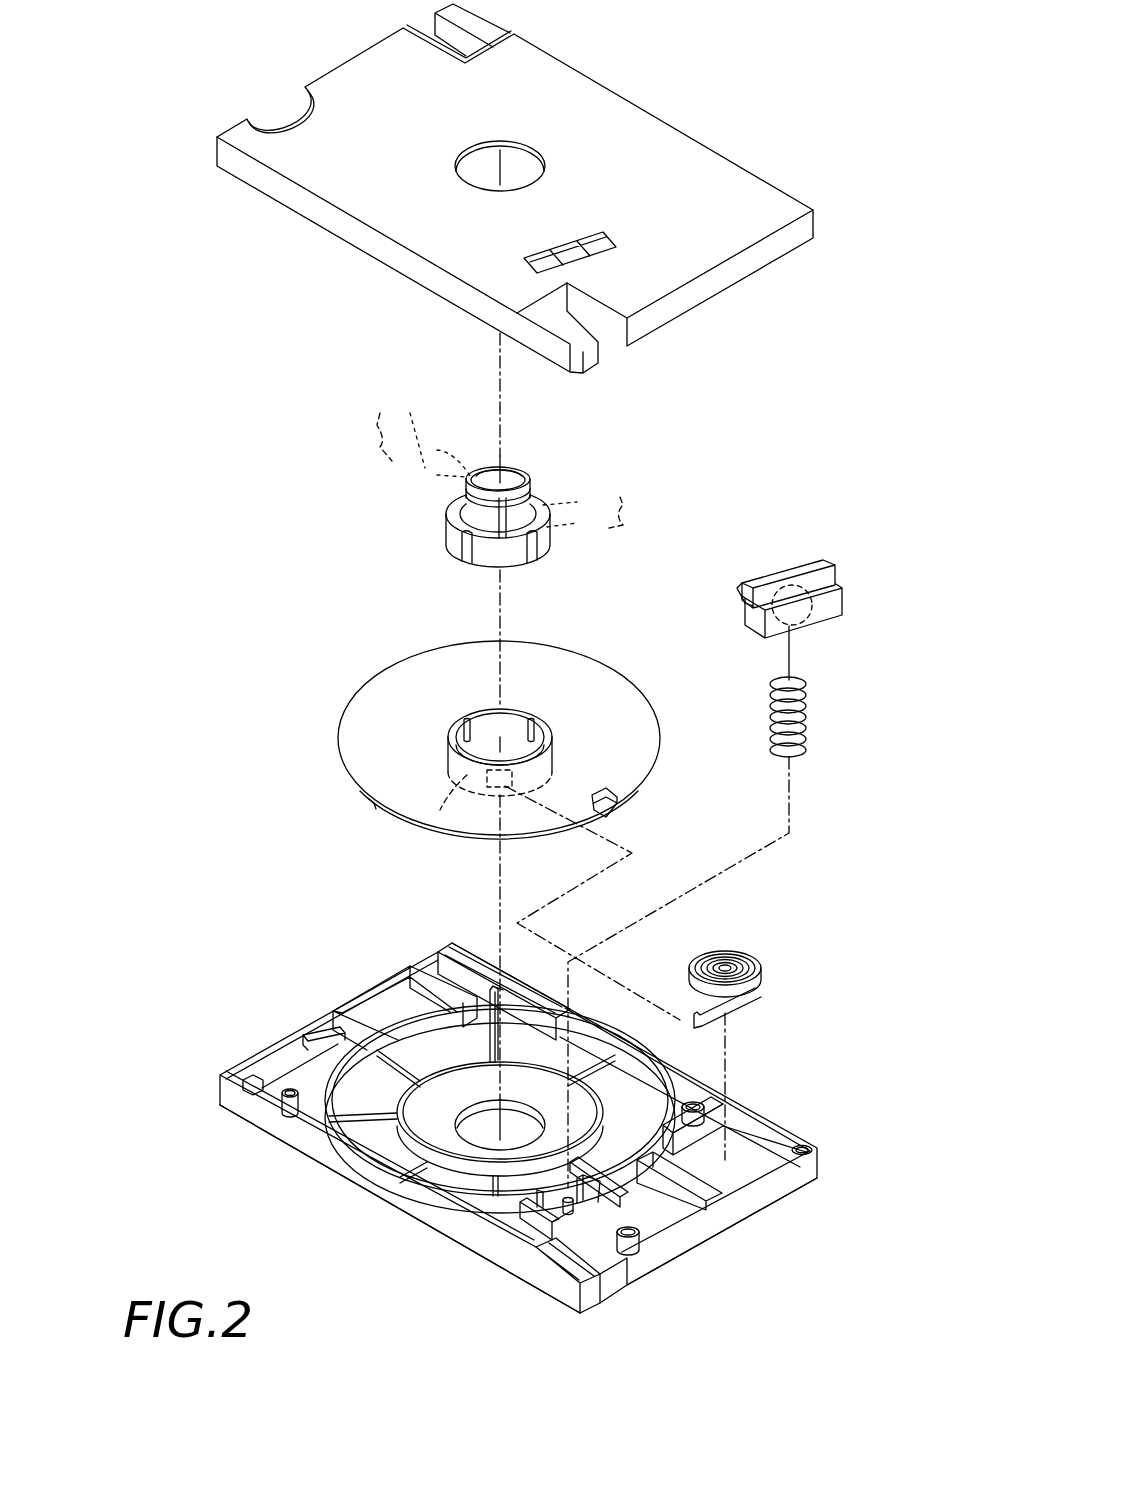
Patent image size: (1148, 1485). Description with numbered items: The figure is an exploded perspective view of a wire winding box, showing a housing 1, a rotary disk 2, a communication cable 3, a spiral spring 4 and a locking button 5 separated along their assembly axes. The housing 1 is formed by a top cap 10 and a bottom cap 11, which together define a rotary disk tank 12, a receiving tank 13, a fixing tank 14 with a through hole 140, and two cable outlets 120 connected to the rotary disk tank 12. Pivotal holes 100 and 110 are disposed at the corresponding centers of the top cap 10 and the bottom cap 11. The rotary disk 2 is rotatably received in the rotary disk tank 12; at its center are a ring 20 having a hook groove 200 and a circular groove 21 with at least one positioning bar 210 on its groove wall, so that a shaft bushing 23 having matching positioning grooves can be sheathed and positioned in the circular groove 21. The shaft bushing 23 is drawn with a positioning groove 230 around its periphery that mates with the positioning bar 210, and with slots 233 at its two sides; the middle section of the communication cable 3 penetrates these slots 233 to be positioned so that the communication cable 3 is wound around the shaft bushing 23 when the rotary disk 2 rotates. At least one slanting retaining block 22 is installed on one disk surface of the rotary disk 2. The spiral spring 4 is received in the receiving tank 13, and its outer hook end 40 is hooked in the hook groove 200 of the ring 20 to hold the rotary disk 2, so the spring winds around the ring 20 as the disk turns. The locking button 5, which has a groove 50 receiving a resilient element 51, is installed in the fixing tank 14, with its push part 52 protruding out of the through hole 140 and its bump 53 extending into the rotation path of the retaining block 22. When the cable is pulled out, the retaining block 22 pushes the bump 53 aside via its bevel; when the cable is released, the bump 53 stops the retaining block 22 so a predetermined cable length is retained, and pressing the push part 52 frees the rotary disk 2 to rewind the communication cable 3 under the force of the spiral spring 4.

The housing 1 is at (270, 1040).
The top cap 10 is at (402, 217).
The pivotal hole 100 is at (530, 148).
The through hole 140 is at (565, 247).
The bottom cap 11 is at (410, 1207).
The pivotal hole 110 is at (490, 1140).
The rotary disk tank 12 is at (368, 1152).
The cable outlets 120 is at (433, 967).
The receiving tank 13 is at (763, 1157).
The fixing tank 14 is at (527, 1230).
The rotary disk 2 is at (357, 738).
The ring 20 is at (440, 810).
The hook groove 200 is at (490, 782).
The circular groove 21 is at (487, 718).
The positioning bar 210 is at (460, 722).
The slanting retaining block 22 is at (377, 809).
The shaft bushing 23 is at (512, 474).
The notches of knob 230 is at (467, 549).
The slots 233 is at (503, 518).
The communication cable 3 is at (412, 404).
The spiral spring 4 is at (742, 960).
The outer hook end 40 is at (727, 1010).
The locking button 5 is at (832, 607).
The groove 50 is at (798, 624).
The resilient element 51 is at (810, 717).
The push part 52 is at (822, 570).
The bump 53 is at (742, 591).